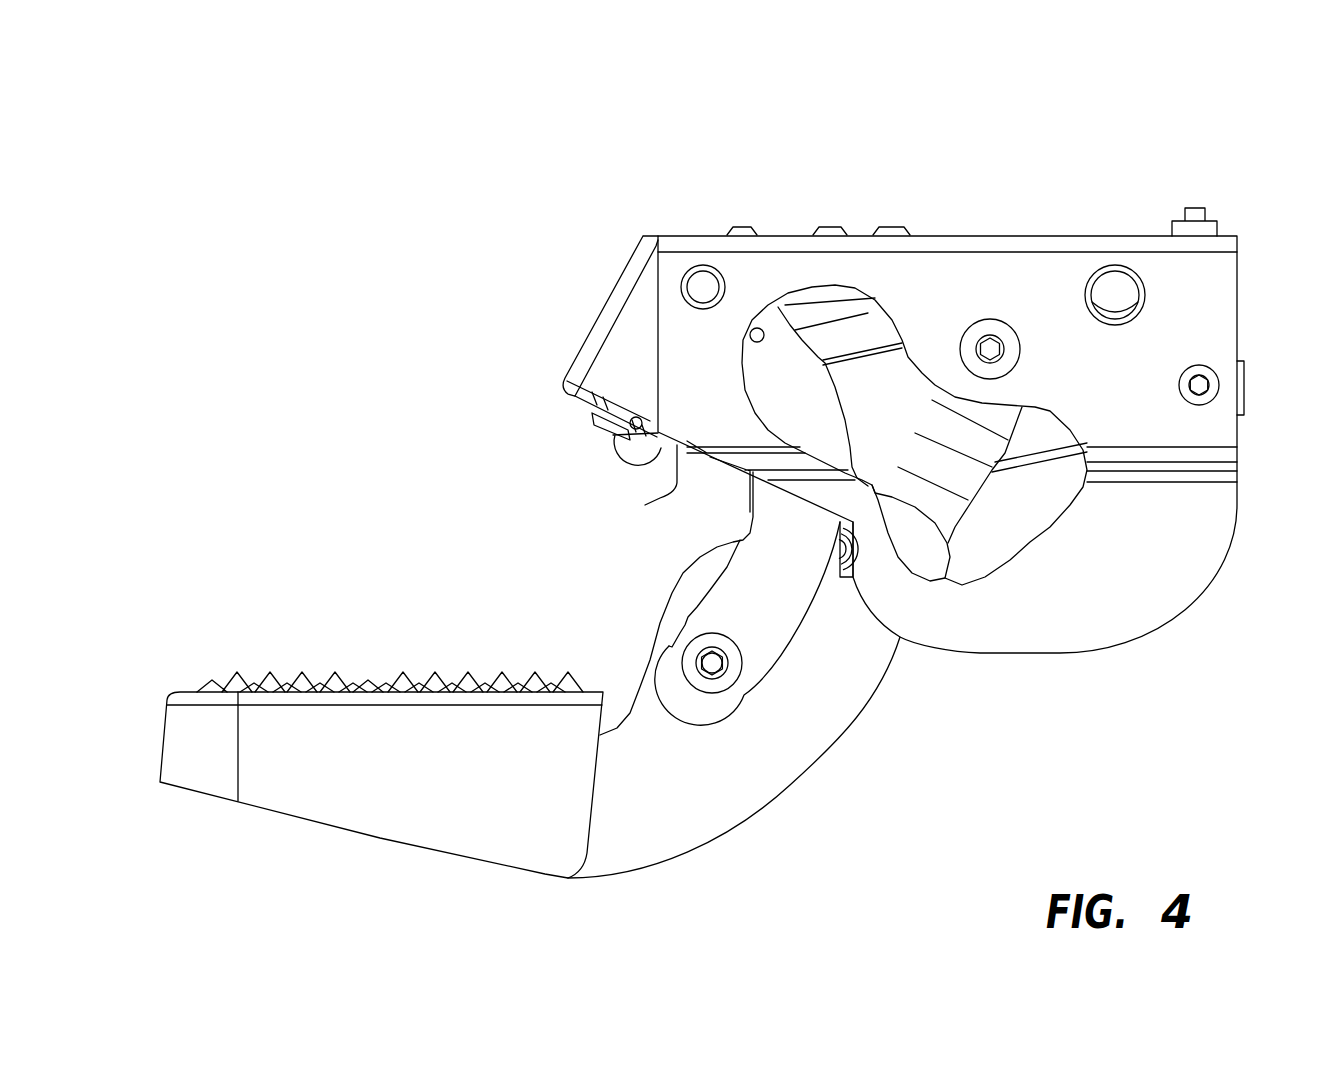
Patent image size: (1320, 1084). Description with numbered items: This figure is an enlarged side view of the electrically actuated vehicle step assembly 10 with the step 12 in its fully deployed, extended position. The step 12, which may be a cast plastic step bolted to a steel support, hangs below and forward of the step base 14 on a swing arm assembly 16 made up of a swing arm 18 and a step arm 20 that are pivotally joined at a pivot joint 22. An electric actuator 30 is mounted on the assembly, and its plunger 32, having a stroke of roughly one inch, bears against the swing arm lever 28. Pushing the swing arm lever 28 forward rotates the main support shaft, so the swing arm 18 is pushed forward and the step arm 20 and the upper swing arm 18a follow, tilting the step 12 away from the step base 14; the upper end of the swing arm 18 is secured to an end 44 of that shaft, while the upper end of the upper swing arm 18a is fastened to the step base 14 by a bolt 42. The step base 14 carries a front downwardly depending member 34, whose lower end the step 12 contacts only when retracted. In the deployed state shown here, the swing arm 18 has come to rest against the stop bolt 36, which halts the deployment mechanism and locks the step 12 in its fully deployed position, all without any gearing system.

The vehicle step assembly 10 is at (377, 353).
The step 12 is at (408, 786).
The step base 14 is at (984, 232).
The swing arm assembly 16 is at (672, 875).
The swing arm 18 is at (775, 517).
The upper swing arm 18a is at (963, 478).
The step arm 20 is at (722, 792).
The pivot joint 22 is at (718, 668).
The swing arm lever 28 is at (613, 443).
The electric actuator 30 is at (868, 365).
The plunger 32 is at (650, 503).
The front downwardly depending member 34 is at (623, 277).
The stop bolt 36 is at (838, 573).
The bolt 42 is at (1002, 330).
The end of the shaft 44 is at (703, 270).